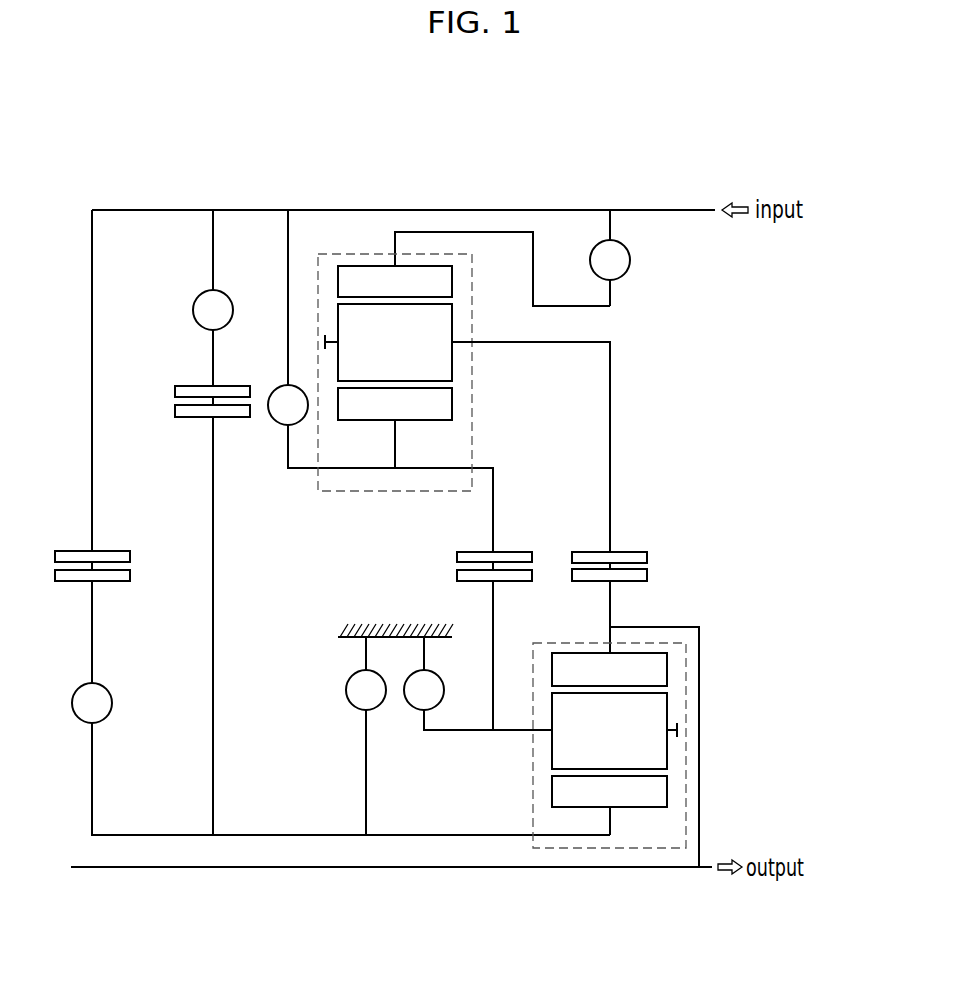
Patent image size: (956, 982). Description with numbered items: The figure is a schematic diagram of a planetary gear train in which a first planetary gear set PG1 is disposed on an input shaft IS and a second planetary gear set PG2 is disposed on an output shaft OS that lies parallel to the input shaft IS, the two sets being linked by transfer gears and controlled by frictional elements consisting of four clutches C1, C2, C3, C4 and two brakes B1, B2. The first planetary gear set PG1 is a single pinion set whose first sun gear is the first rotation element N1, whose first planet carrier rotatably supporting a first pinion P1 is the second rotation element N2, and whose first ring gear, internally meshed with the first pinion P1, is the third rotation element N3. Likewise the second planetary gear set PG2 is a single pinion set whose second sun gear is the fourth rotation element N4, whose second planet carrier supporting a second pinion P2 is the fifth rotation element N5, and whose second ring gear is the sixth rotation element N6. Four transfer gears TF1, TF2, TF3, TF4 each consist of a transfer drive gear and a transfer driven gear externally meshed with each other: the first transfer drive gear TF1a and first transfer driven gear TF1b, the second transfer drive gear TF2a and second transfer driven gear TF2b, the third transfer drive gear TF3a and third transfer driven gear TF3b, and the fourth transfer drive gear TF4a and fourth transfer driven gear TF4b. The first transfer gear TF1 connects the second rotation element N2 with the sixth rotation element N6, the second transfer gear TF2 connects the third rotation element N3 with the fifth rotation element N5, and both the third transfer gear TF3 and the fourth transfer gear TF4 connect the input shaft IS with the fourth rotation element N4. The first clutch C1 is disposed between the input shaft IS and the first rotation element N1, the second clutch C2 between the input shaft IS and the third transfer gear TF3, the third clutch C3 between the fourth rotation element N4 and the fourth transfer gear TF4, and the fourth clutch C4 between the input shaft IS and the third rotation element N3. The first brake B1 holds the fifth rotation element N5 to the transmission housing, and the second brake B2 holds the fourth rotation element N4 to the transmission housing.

The first planetary gear set PG1 is at (350, 256).
The second planetary gear set PG2 is at (625, 850).
The input shaft IS is at (615, 207).
The output shaft OS is at (325, 869).
The first clutch C1 is at (610, 260).
The second clutch C2 is at (213, 310).
The third clutch C3 is at (92, 703).
The fourth clutch C4 is at (288, 405).
The first brake B1 is at (424, 690).
The second brake B2 is at (366, 690).
The first rotation element N1 is at (395, 281).
The second rotation element N2 is at (523, 345).
The third rotation element N3 is at (395, 404).
The fourth rotation element N4 is at (609, 791).
The fifth rotation element N5 is at (470, 732).
The sixth rotation element N6 is at (609, 669).
The first pinion P1 is at (395, 342).
The second pinion P2 is at (609, 731).
The first transfer gear TF1 is at (672, 568).
The first transfer drive gear TF1a is at (622, 552).
The first transfer driven gear TF1b is at (622, 581).
The second transfer gear TF2 is at (435, 568).
The second transfer drive gear TF2a is at (482, 552).
The second transfer driven gear TF2b is at (482, 581).
The third transfer gear TF3 is at (177, 457).
The third transfer drive gear TF3a is at (175, 390).
The third transfer driven gear TF3b is at (175, 412).
The fourth transfer gear TF4 is at (128, 628).
The fourth transfer drive gear TF4a is at (130, 557).
The fourth transfer driven gear TF4b is at (99, 612).